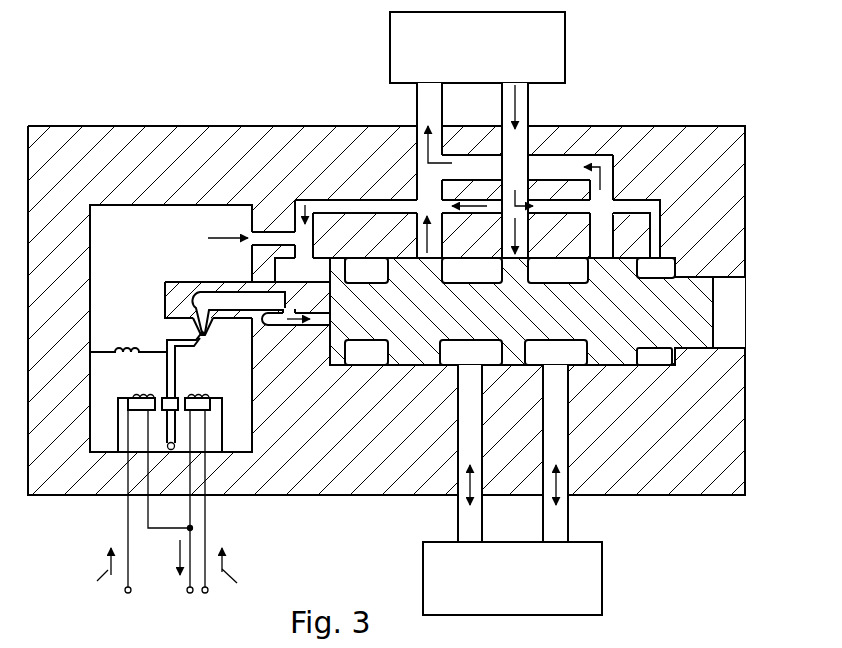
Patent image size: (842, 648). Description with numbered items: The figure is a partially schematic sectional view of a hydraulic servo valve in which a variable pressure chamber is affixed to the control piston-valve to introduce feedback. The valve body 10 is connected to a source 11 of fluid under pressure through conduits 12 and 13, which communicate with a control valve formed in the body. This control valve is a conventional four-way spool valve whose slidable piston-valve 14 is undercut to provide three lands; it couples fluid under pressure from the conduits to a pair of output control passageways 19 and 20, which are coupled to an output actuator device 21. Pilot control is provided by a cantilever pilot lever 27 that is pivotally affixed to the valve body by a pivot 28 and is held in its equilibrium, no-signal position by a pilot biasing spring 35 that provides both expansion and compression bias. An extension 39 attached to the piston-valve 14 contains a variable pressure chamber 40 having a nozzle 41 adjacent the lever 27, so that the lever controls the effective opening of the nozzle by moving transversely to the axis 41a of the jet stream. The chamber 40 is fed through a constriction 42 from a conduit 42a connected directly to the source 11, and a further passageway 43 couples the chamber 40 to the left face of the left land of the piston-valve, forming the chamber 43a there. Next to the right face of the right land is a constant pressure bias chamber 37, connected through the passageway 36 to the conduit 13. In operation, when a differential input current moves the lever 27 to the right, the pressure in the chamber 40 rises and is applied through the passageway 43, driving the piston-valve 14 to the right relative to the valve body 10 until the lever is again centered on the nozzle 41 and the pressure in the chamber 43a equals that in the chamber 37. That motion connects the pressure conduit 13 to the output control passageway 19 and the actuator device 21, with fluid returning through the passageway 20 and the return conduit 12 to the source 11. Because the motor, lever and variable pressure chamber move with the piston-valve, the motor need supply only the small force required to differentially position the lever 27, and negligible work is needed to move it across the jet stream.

The valve body 10 is at (660, 137).
The source of fluid 11 is at (565, 68).
The conduit 12 is at (417, 116).
The conduit 13 is at (514, 190).
The control piston-valve 14 is at (703, 298).
The output control passageway 19 is at (466, 517).
The output control passageway 20 is at (566, 517).
The output actuator device 21 is at (597, 567).
The pilot lever 27 is at (176, 375).
The pivot 28 is at (166, 494).
The pilot biasing spring 35 is at (137, 348).
The passageway 36 is at (658, 210).
The constant pressure bias chamber 37 is at (671, 267).
The extension 39 is at (182, 287).
The variable pressure chamber 40 is at (213, 305).
The nozzle 41 is at (208, 334).
The axis of the jet stream 41a is at (206, 346).
The constriction 42 is at (283, 314).
The conduit 42a is at (365, 200).
The passageway 43 is at (323, 327).
The chamber 43a is at (362, 354).